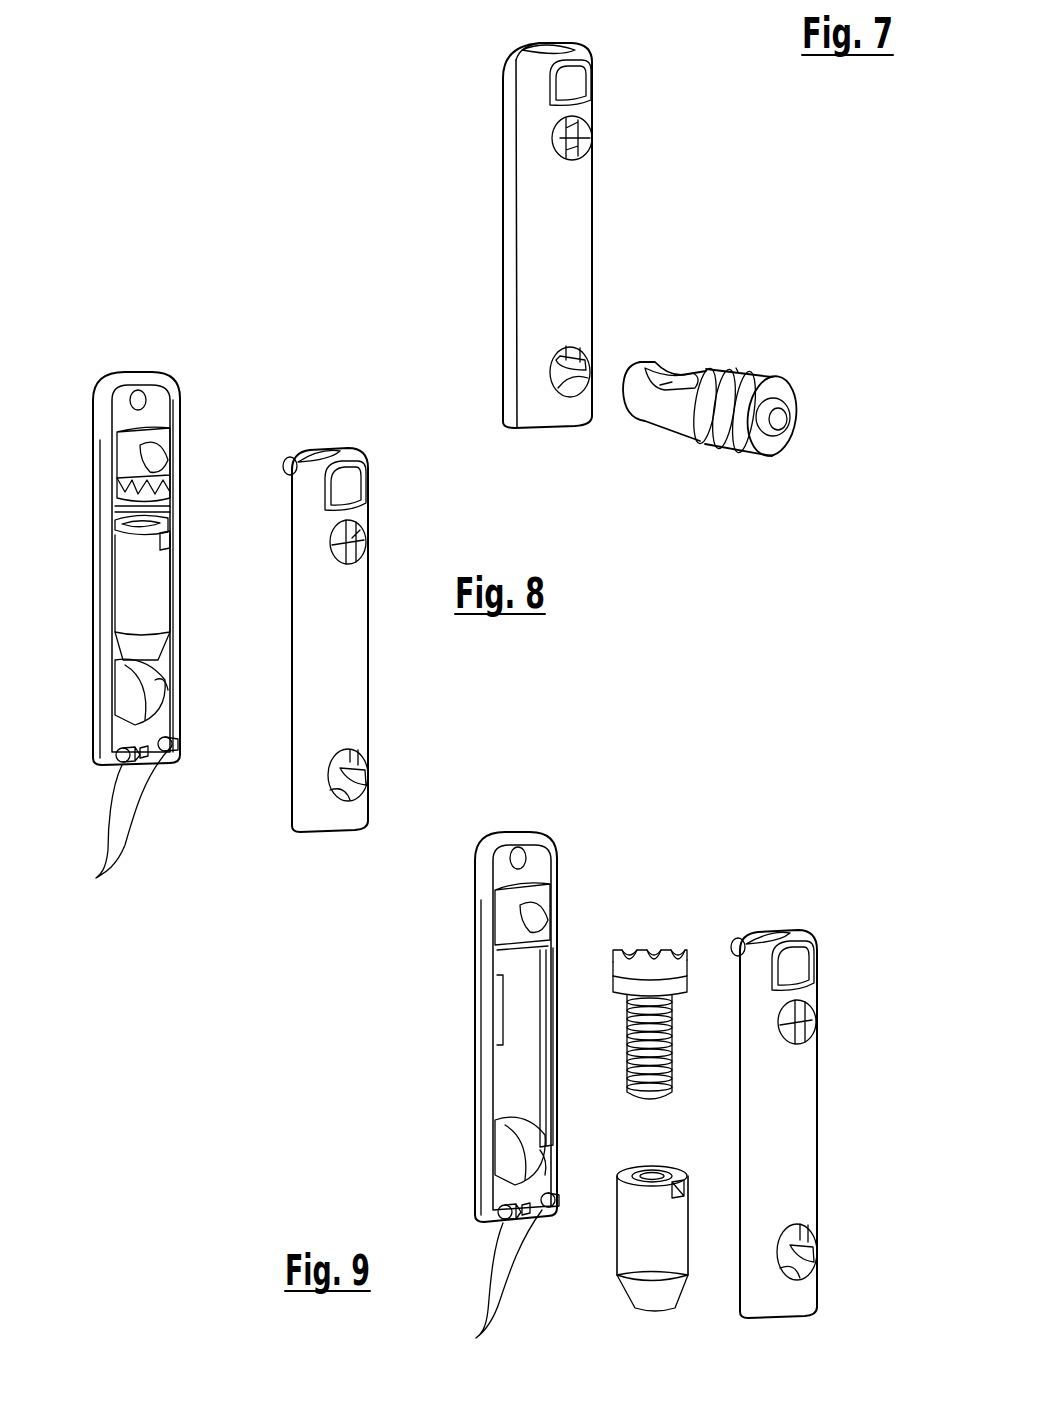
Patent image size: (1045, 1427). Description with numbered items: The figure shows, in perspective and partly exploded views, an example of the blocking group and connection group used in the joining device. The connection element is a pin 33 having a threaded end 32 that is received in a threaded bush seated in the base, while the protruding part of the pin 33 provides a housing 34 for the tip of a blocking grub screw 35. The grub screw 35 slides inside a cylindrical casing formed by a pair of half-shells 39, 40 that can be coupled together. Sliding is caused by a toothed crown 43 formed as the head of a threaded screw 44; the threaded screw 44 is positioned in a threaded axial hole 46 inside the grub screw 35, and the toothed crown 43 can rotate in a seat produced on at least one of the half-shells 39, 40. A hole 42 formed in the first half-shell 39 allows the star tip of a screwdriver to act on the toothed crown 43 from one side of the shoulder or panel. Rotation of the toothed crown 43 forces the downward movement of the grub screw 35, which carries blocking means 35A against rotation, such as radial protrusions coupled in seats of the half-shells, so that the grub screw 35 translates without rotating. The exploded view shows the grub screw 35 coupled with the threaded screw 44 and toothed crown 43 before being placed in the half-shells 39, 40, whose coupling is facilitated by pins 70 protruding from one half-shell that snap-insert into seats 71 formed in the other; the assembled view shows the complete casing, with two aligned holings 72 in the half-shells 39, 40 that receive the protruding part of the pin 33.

In FIG. 7, the threaded end 32 is at (736, 368).
In FIG. 7, the pin 33 is at (796, 399).
In FIG. 7, the housing 34 is at (667, 357).
In FIG. 8, the blocking grub screw 35 is at (142, 587).
In FIG. 9, the blocking grub screw 35 is at (652, 1238).
In FIG. 8, the blocking means against rotation 35A is at (172, 546).
In FIG. 9, the blocking means against rotation 35A is at (688, 1192).
In FIG. 7, the first half-shell 39 is at (585, 185).
In FIG. 8, the first half-shell 39 is at (330, 640).
In FIG. 9, the first half-shell 39 is at (778, 1124).
In FIG. 7, the second half-shell 40 is at (505, 113).
In FIG. 8, the second half-shell 40 is at (102, 393).
In FIG. 9, the second half-shell 40 is at (490, 1205).
In FIG. 7, the hole 42 is at (593, 142).
In FIG. 8, the hole 42 is at (365, 545).
In FIG. 9, the hole 42 is at (815, 1020).
In FIG. 8, the toothed crown 43 is at (168, 500).
In FIG. 9, the toothed crown 43 is at (642, 952).
In FIG. 8, the threaded screw 44 is at (168, 518).
In FIG. 9, the threaded screw 44 is at (690, 1054).
In FIG. 9, the threaded axial hole 46 is at (641, 1175).
In FIG. 8, the pins 70 is at (355, 338).
In FIG. 9, the pins 70 is at (790, 820).
In FIG. 8, the seats 71 is at (140, 398).
In FIG. 9, the seats 71 is at (522, 855).
In FIG. 7, the aligned holings 72 is at (583, 372).
In FIG. 8, the aligned holings 72 is at (177, 692).
In FIG. 9, the aligned holings 72 is at (557, 1150).